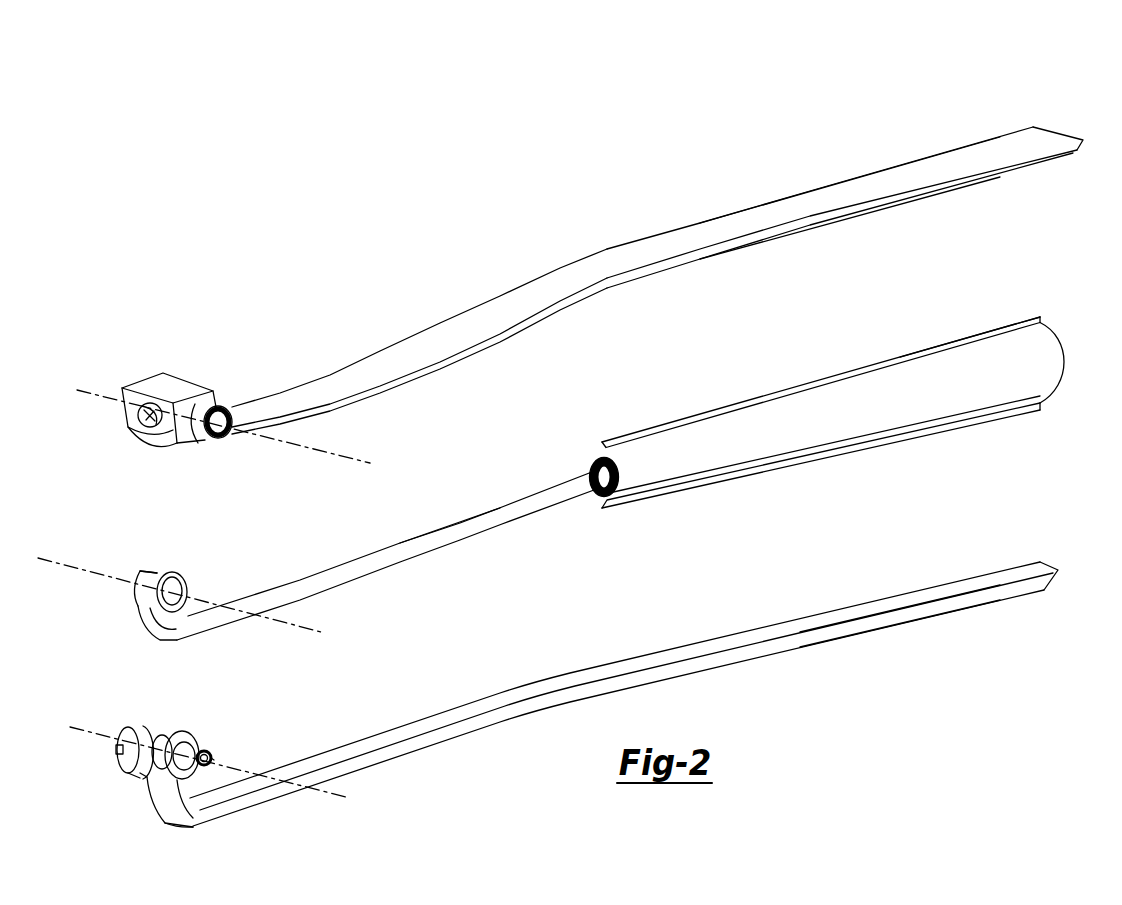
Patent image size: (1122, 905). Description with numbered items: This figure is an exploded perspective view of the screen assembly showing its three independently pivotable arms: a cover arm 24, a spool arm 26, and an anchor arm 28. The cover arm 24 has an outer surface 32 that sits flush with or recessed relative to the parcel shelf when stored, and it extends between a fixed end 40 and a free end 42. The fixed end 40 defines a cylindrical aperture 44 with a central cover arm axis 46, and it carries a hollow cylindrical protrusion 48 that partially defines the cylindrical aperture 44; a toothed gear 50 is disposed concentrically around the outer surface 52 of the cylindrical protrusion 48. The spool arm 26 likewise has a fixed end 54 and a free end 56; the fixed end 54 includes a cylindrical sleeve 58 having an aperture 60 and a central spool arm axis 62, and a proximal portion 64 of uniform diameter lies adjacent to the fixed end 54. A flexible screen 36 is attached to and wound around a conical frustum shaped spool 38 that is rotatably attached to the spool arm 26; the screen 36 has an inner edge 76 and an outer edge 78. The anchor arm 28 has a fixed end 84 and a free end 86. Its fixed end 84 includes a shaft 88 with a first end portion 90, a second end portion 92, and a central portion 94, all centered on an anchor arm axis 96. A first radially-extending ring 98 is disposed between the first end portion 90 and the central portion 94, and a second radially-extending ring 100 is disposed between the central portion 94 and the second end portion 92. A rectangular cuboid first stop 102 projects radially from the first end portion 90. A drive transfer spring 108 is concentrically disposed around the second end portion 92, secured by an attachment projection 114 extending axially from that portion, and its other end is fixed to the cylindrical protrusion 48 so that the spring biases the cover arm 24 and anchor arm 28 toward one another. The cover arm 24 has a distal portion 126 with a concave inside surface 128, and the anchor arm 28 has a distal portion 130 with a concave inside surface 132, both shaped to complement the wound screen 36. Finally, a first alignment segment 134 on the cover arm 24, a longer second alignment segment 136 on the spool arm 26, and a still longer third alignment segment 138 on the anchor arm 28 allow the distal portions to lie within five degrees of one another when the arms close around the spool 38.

The cover arm 24 is at (495, 334).
The spool arm 26 is at (502, 507).
The anchor arm 28 is at (492, 705).
The outer surface 32 is at (607, 248).
The flexible screen 36 is at (785, 410).
The spool 38 is at (593, 494).
The fixed end 40 is at (170, 396).
The free end 42 is at (1022, 106).
The cylindrical aperture 44 is at (143, 428).
The cover arm axis 46 is at (83, 387).
The hollow cylindrical protrusion 48 is at (205, 406).
The toothed gear 50 is at (230, 410).
The outer surface 52 is at (195, 428).
The fixed end 54 is at (160, 559).
The free end 56 is at (1033, 281).
The cylindrical sleeve 58 is at (153, 574).
The aperture 60 is at (178, 590).
The spool arm axis 62 is at (70, 567).
The proximal portion 64 is at (453, 520).
The inner edge 76 is at (593, 458).
The outer edge 78 is at (1053, 342).
The fixed end 84 is at (160, 745).
The free end 86 is at (1035, 533).
The shaft 88 is at (140, 773).
The first end portion 90 is at (131, 733).
The second end portion 92 is at (178, 763).
The central portion 94 is at (160, 742).
The anchor arm axis 96 is at (347, 800).
The first radially-extending ring 98 is at (147, 733).
The second radially-extending ring 100 is at (178, 737).
The first stop 102 is at (116, 750).
The drive transfer spring 108 is at (207, 750).
The attachment projection 114 is at (217, 760).
The distal portion 126 is at (881, 170).
The inside surface 128 is at (860, 214).
The distal portion 130 is at (921, 626).
The inside surface 132 is at (930, 600).
The first alignment segment 134 is at (170, 453).
The second alignment segment 136 is at (130, 603).
The third alignment segment 138 is at (180, 803).